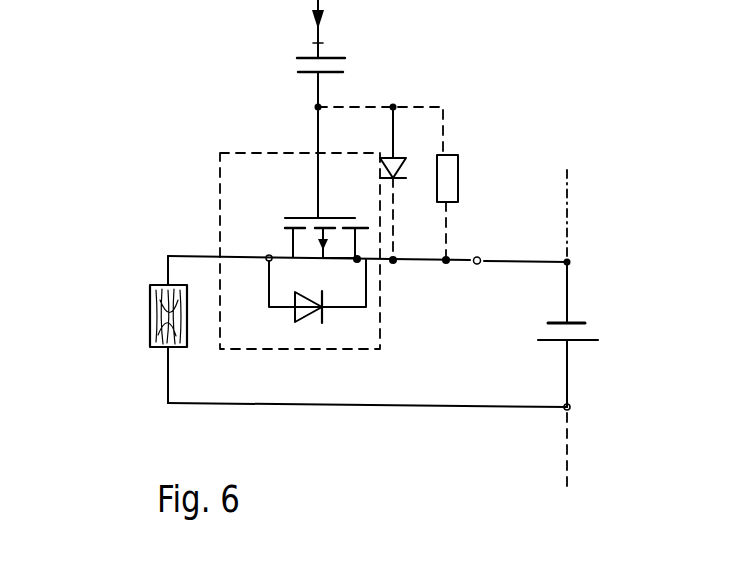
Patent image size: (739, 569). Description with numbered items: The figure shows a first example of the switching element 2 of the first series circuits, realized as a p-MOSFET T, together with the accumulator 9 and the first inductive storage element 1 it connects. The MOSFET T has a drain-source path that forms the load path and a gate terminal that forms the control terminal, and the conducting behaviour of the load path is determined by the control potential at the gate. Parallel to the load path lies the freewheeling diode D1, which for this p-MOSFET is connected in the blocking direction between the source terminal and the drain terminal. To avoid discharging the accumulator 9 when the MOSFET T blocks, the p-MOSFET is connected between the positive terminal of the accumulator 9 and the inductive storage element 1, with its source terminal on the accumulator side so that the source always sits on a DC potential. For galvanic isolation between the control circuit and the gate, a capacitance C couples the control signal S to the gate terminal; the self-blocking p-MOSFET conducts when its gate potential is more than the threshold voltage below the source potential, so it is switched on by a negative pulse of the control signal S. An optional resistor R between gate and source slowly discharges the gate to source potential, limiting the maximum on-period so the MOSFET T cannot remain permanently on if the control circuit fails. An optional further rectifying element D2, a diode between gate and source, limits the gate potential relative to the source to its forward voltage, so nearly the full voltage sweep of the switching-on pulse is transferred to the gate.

The first inductive storage element 1 is at (122, 322).
The first switching element 2 is at (237, 150).
The accumulator 9 is at (630, 340).
The control signal S is at (327, 29).
The capacitance C is at (303, 138).
The MOSFET T is at (342, 207).
The freewheeling diode D1 is at (316, 302).
The further rectifying element D2 is at (380, 141).
The resistor R is at (464, 181).